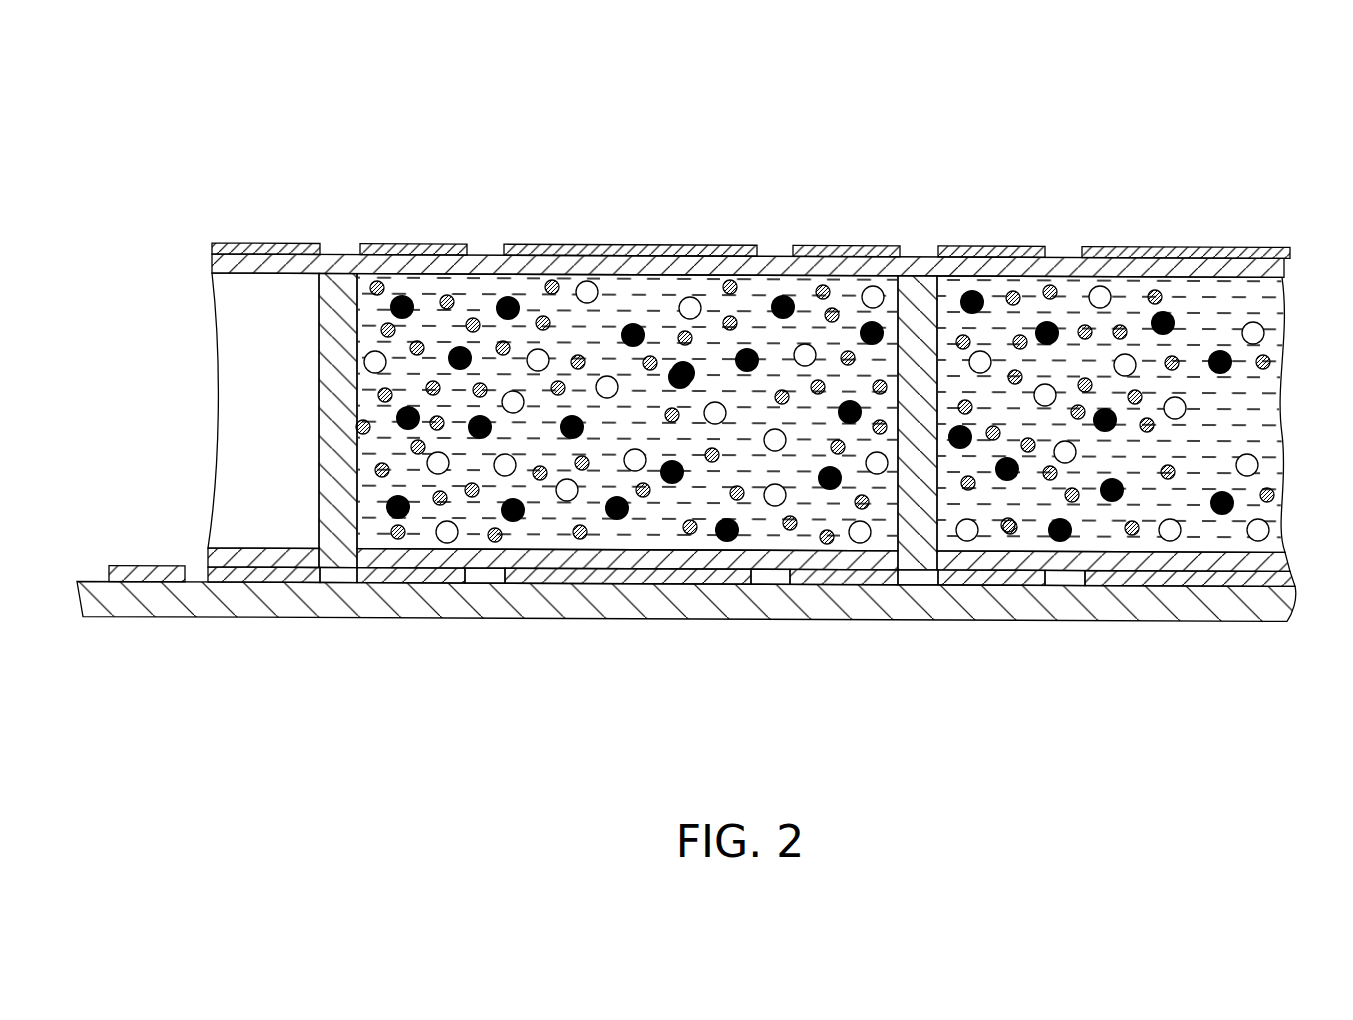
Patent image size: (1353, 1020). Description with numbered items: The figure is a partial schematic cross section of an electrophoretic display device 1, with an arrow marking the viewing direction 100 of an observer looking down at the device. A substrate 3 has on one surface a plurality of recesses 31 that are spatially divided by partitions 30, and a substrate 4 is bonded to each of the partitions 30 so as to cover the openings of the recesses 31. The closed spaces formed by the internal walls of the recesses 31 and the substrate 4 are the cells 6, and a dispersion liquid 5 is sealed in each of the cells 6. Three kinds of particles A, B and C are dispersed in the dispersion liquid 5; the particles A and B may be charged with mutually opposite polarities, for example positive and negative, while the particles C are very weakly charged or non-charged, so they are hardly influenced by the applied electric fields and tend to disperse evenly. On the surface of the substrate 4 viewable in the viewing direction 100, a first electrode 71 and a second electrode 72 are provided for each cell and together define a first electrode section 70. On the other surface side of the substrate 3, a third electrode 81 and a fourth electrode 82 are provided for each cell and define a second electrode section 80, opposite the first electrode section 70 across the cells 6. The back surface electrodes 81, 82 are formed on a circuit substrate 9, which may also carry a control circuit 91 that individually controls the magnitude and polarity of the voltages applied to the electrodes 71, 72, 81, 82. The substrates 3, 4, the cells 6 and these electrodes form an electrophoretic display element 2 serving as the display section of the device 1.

The electrophoretic display device 1 is at (1110, 131).
The electrophoretic display element 2 is at (1319, 246).
The substrate 3 is at (210, 556).
The substrate 4 is at (214, 262).
The dispersion liquid 5 is at (790, 273).
The cell 6 is at (236, 449).
The circuit substrate 9 is at (1195, 610).
The partition 30 is at (330, 330).
The recess 31 is at (245, 550).
The first electrode section 70 is at (507, 112).
The first electrode 71 is at (290, 243).
The second electrode 72 is at (633, 243).
The second electrode section 80 is at (502, 709).
The third electrode 81 is at (283, 574).
The fourth electrode 82 is at (595, 580).
The control circuit 91 is at (150, 566).
The viewing direction 100 is at (768, 143).
The particles A is at (460, 350).
The particles B is at (805, 345).
The particles C is at (377, 282).